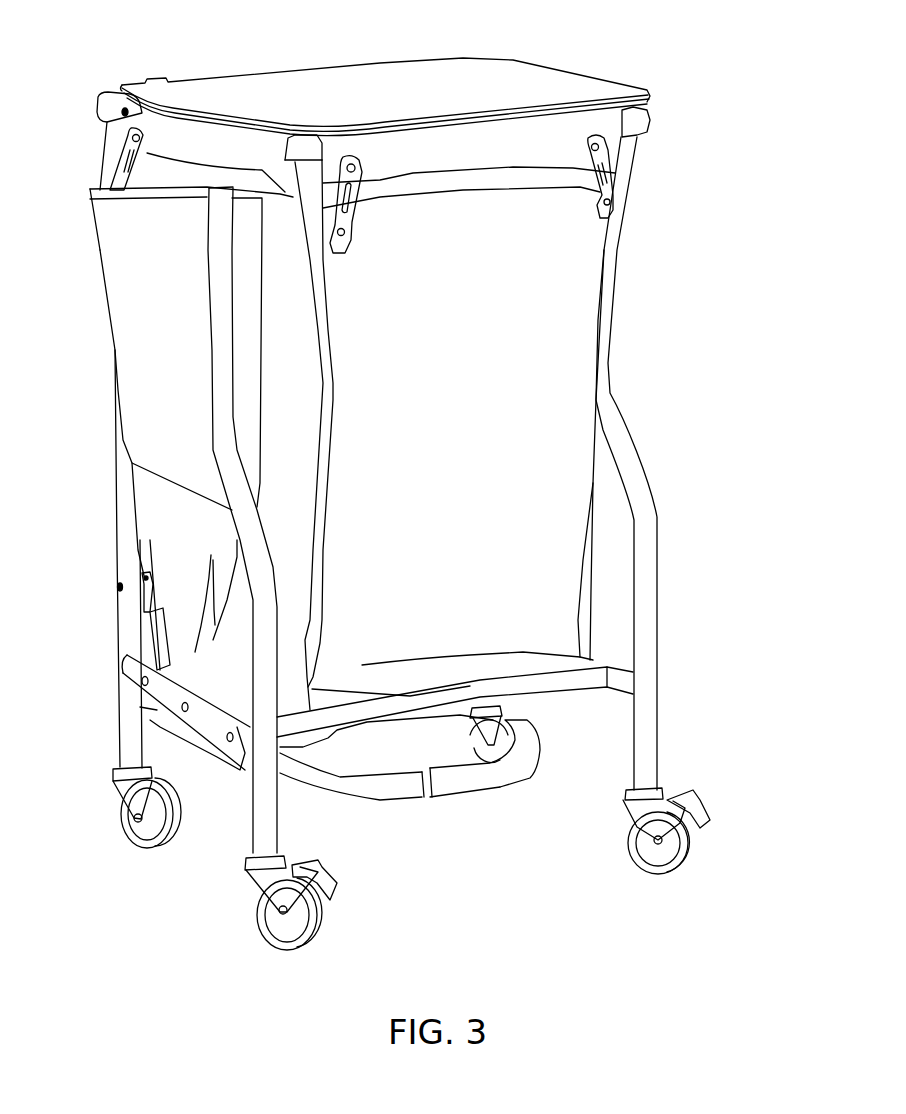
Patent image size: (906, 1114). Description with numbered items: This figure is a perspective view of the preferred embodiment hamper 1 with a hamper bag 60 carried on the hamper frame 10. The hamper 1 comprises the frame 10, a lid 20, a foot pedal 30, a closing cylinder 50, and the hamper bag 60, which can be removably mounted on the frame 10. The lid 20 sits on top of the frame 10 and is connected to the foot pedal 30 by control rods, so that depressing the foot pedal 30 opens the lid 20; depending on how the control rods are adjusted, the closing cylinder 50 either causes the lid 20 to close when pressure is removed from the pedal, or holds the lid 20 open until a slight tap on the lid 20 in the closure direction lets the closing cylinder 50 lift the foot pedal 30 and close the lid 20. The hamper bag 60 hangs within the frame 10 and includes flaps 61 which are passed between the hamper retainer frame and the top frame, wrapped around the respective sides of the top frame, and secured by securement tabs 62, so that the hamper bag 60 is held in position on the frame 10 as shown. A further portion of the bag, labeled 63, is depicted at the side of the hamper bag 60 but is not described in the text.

The hamper 1 is at (707, 104).
The frame 10 is at (655, 511).
The lid 20 is at (388, 80).
The foot pedal 30 is at (385, 800).
The closing cylinder 50 is at (140, 639).
The hamper bag 60 is at (477, 458).
The flaps 61 is at (183, 135).
The securement tabs 62 is at (118, 168).
The bag flap 63 is at (187, 298).